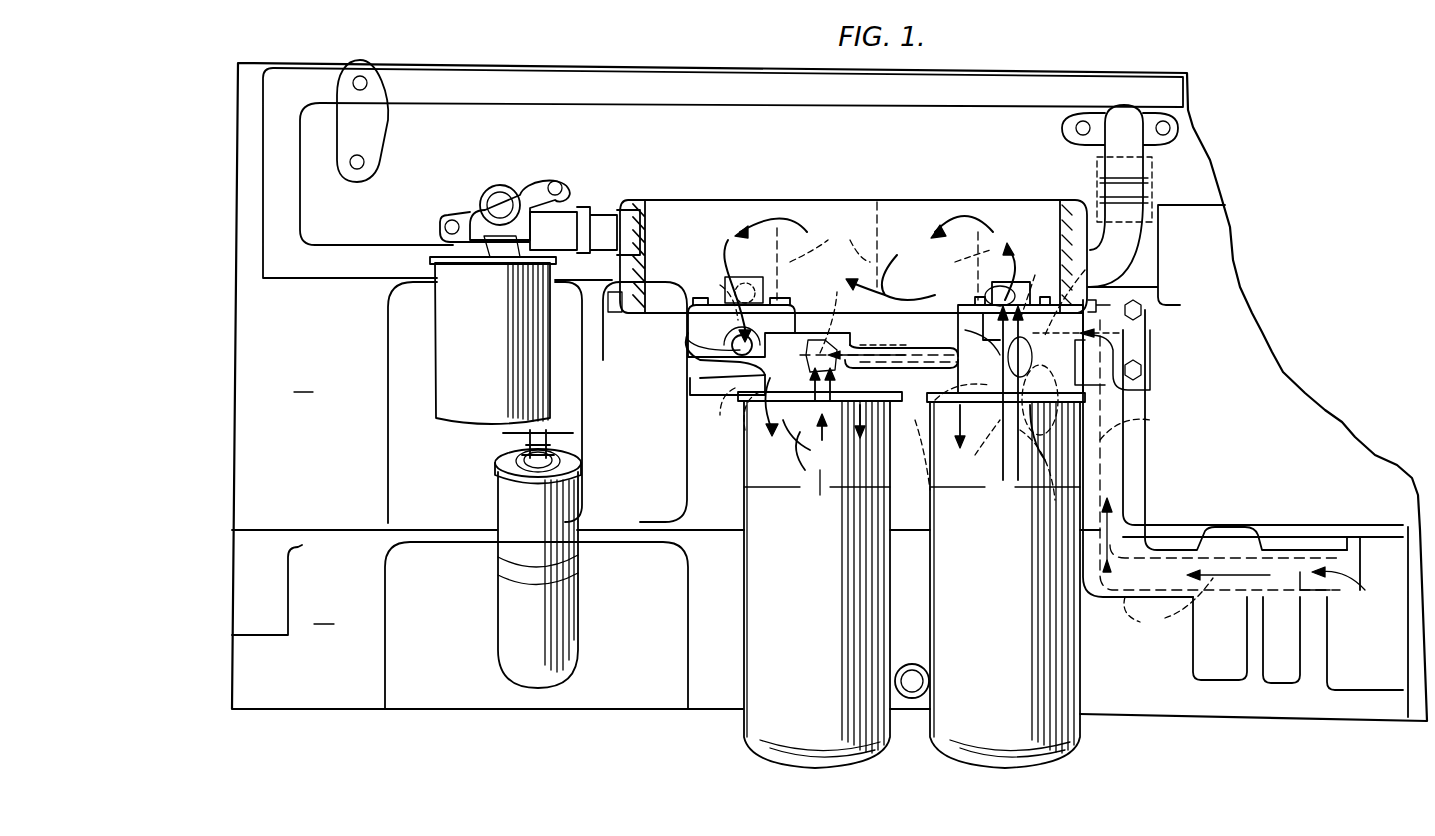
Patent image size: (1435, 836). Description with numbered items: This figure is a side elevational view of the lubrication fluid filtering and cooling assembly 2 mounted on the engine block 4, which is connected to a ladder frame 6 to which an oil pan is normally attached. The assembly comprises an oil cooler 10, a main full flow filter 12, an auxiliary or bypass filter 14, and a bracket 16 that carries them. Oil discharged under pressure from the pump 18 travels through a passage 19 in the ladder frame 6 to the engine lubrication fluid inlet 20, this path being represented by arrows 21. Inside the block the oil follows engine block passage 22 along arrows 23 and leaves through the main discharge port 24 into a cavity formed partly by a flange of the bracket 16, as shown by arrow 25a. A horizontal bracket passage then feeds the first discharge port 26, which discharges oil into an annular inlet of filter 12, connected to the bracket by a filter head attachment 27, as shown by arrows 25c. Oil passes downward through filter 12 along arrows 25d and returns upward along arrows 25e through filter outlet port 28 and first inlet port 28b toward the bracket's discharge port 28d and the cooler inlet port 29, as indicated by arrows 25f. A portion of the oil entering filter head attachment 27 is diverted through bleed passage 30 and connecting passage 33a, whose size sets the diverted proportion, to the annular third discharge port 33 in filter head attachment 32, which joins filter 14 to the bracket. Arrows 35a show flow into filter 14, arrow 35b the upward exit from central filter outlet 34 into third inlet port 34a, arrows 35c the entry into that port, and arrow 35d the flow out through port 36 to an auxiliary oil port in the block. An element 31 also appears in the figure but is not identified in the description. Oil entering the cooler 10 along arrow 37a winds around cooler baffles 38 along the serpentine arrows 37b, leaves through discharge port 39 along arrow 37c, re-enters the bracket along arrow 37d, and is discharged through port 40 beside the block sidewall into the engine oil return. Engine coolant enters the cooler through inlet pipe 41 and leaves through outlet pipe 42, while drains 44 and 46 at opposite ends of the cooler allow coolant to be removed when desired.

The lubrication fluid filtering and cooling assembly 2 is at (1168, 265).
The engine block 4 is at (303, 380).
The ladder frame 6 is at (324, 612).
The oil cooler 10 is at (856, 200).
The main full flow lubrication fluid filter 12 is at (1040, 757).
The auxiliary or bypass filter 14 is at (760, 750).
The bracket 16 is at (1148, 343).
The pump 18 is at (1395, 585).
The passage 19 is at (1320, 590).
The engine lubrication fluid inlet 20 is at (1112, 532).
The arrows 21 is at (1168, 604).
The engine block passage 22 is at (1112, 478).
The arrows 23 is at (1110, 455).
The main discharge port 24 is at (1125, 360).
The arrow 25a is at (1125, 330).
The arrows 25c is at (1040, 462).
The arrows 25d is at (976, 471).
The arrows 25e is at (1003, 485).
The arrows 25f is at (1084, 290).
The first discharge port 26 is at (940, 435).
The filter head attachment 27 is at (975, 325).
The filter outlet port 28 is at (985, 470).
The first inlet port 28b is at (957, 445).
The discharge port 28d is at (1037, 285).
The inlet port 29 is at (980, 292).
The bleed passage 30 is at (895, 345).
The pipe passage 31 is at (900, 368).
The filter head attachment 32 is at (720, 385).
The annular discharge port 33 is at (735, 392).
The connecting passage 33a is at (872, 350).
The central filter outlet 34 is at (830, 430).
The inlet port 34a is at (810, 410).
The arrows 35a is at (760, 405).
The arrow 35b is at (824, 470).
The arrows 35c is at (790, 449).
The arrow 35d is at (769, 327).
The port 36 is at (833, 318).
The arrow 37a is at (1015, 248).
The arrows 37b is at (864, 235).
The arrow 37c is at (722, 245).
The arrow 37d is at (718, 288).
The cooler baffles 38 is at (890, 248).
The discharge port 39 is at (758, 275).
The port 40 is at (690, 370).
The inlet pipe 41 is at (620, 240).
The outlet pipe 42 is at (1135, 242).
The drain 44 is at (612, 298).
The drain 46 is at (1142, 305).